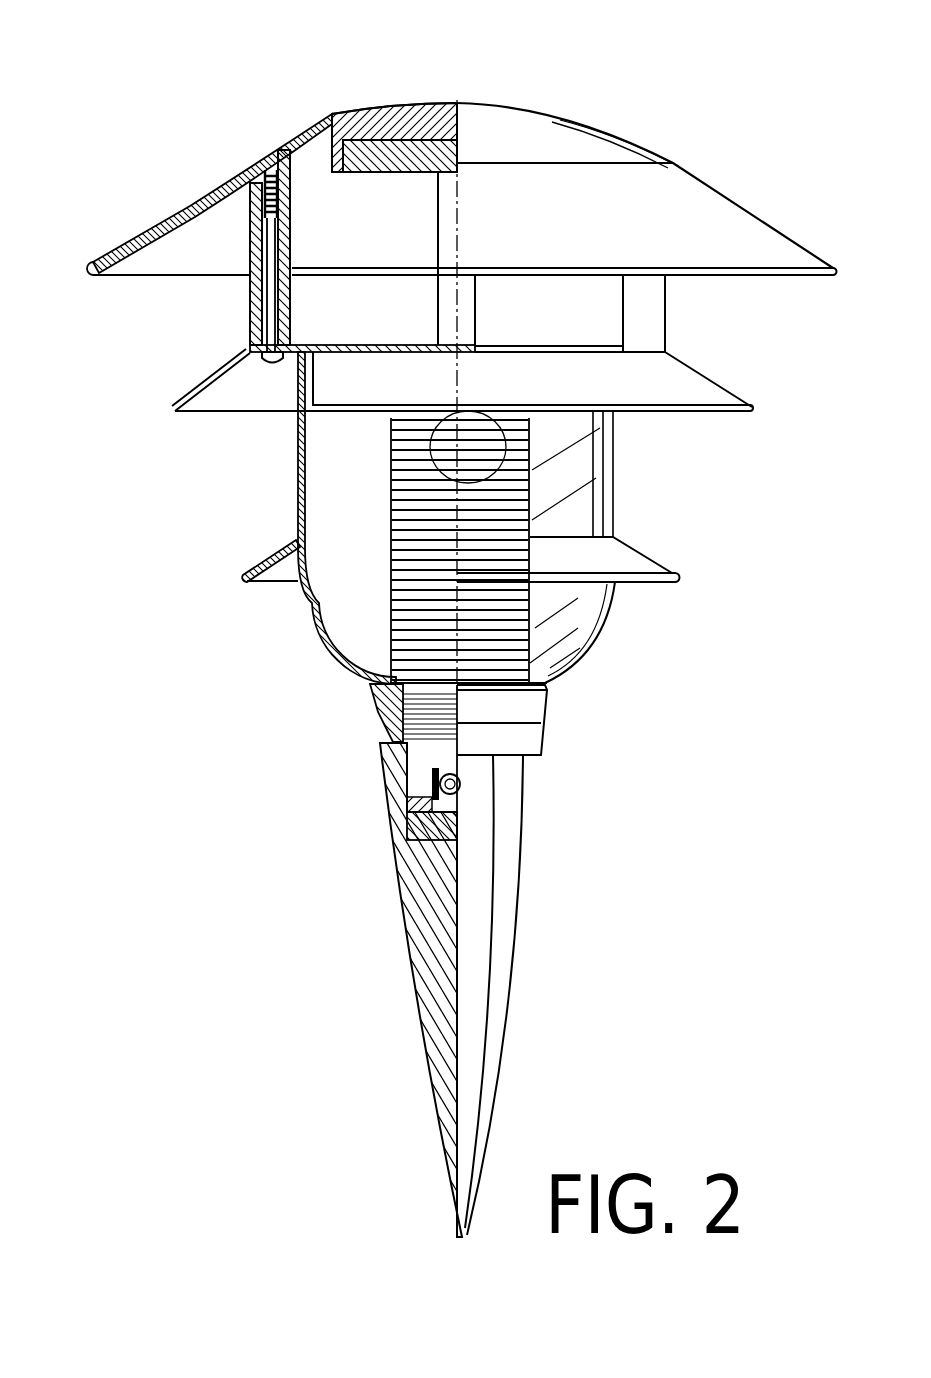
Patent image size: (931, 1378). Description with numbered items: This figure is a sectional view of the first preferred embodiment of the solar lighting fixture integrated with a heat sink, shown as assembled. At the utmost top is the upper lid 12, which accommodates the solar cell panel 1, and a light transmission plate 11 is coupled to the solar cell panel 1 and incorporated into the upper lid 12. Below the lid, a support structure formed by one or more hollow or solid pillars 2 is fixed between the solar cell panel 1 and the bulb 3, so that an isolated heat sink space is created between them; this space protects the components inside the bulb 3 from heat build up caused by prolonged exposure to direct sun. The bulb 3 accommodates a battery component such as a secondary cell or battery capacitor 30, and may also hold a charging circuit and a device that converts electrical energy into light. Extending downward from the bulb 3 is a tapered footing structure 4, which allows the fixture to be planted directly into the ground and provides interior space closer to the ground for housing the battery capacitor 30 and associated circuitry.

The solar cell panel 1 is at (425, 160).
The light transmission plate 11 is at (380, 120).
The upper lid 12 is at (197, 200).
The pillar 2 is at (250, 290).
The bulb 3 is at (298, 480).
The battery capacitor 30 is at (437, 783).
The tapered footing structure 4 is at (423, 905).